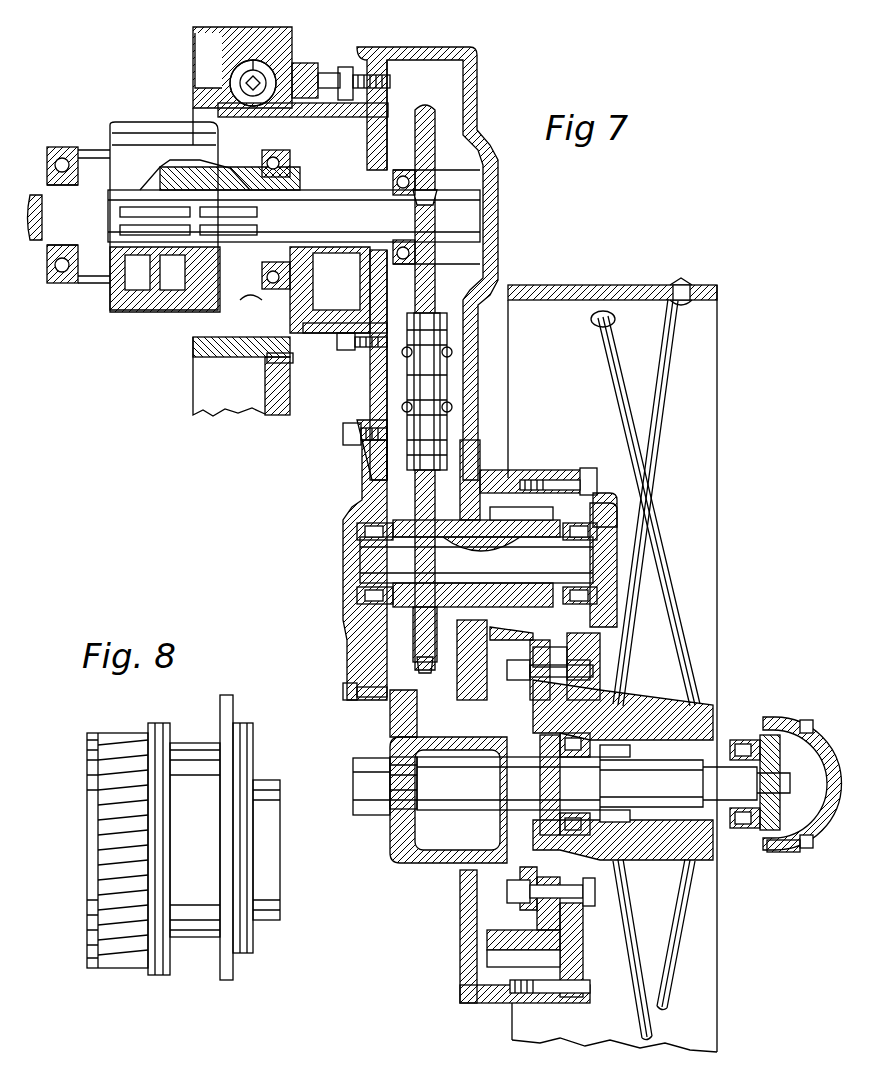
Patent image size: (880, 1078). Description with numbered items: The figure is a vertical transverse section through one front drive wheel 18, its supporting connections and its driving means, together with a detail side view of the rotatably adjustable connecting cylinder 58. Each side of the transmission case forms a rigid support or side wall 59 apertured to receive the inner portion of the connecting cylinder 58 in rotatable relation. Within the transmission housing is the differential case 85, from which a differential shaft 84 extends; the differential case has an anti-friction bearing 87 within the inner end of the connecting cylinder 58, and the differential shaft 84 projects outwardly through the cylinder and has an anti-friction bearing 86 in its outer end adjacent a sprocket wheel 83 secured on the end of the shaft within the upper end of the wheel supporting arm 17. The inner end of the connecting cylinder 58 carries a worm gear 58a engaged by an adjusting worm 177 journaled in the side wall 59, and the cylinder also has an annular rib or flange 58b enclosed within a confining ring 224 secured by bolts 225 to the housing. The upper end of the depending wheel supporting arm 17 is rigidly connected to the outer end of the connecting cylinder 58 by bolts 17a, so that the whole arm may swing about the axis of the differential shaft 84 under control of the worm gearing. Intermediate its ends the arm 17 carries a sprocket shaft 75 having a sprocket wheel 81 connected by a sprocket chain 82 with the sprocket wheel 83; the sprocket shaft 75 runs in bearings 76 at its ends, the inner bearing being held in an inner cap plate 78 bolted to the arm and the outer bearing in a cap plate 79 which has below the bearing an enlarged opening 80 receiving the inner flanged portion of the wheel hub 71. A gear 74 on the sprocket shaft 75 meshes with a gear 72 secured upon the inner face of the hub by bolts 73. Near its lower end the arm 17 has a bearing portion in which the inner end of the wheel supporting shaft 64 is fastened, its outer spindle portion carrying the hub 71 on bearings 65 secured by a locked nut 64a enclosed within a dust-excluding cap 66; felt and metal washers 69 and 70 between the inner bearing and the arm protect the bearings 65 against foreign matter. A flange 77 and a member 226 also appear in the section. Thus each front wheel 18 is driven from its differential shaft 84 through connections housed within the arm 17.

In FIG. 7, the wheel supporting arm 17 is at (476, 90).
In FIG. 7, the bolts 17a is at (345, 67).
In FIG. 7, the drive wheel 18 is at (718, 506).
In FIG. 7, the connecting cylinder 58 is at (333, 308).
In FIG. 8, the connecting cylinder 58 is at (193, 740).
In FIG. 7, the worm gear 58a is at (245, 335).
In FIG. 8, the worm gear 58a is at (130, 965).
In FIG. 7, the annular rib or flange 58b is at (272, 365).
In FIG. 7, the side wall 59 is at (233, 413).
In FIG. 7, the wheel supporting shaft 64 is at (470, 780).
In FIG. 7, the locked nut 64a is at (780, 765).
In FIG. 7, the bearings 65 is at (608, 752).
In FIG. 7, the dust-excluding cap 66 is at (780, 852).
In FIG. 7, the felt washer 69 is at (558, 760).
In FIG. 7, the metal washer 70 is at (543, 752).
In FIG. 7, the wheel hub 71 is at (545, 855).
In FIG. 7, the gear 72 is at (510, 955).
In FIG. 7, the bolts 73 is at (565, 893).
In FIG. 7, the gear 74 is at (507, 530).
In FIG. 7, the sprocket shaft 75 is at (430, 560).
In FIG. 7, the bearings 76 is at (360, 535).
In FIG. 7, the flange 77 is at (567, 470).
In FIG. 7, the inner cap plate 78 is at (352, 644).
In FIG. 7, the cap plate 79 is at (598, 645).
In FIG. 7, the enlarged opening 80 is at (584, 651).
In FIG. 7, the sprocket wheel 81 is at (420, 665).
In FIG. 7, the sprocket chain 82 is at (447, 373).
In FIG. 7, the sprocket wheel 83 is at (425, 108).
In FIG. 7, the differential shaft 84 is at (336, 210).
In FIG. 7, the differential case 85 is at (148, 312).
In FIG. 7, the anti-friction bearing 86 is at (397, 192).
In FIG. 7, the anti-friction bearing 87 is at (63, 285).
In FIG. 7, the adjusting worm 177 is at (262, 68).
In FIG. 7, the confining ring 224 is at (332, 345).
In FIG. 7, the bolts 225 is at (340, 352).
In FIG. 7, the flange 226 is at (545, 652).